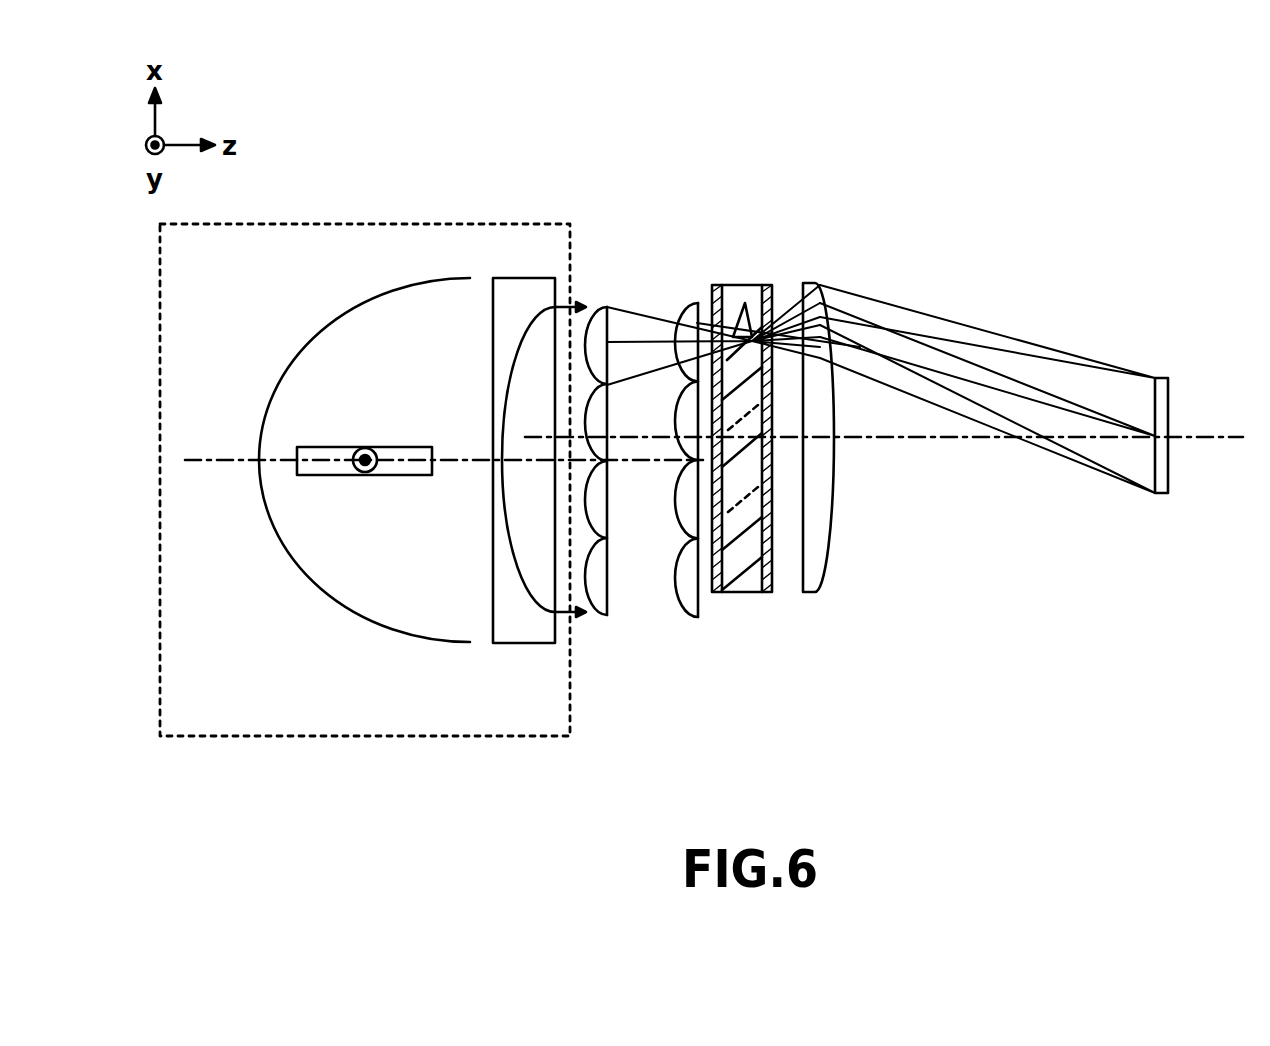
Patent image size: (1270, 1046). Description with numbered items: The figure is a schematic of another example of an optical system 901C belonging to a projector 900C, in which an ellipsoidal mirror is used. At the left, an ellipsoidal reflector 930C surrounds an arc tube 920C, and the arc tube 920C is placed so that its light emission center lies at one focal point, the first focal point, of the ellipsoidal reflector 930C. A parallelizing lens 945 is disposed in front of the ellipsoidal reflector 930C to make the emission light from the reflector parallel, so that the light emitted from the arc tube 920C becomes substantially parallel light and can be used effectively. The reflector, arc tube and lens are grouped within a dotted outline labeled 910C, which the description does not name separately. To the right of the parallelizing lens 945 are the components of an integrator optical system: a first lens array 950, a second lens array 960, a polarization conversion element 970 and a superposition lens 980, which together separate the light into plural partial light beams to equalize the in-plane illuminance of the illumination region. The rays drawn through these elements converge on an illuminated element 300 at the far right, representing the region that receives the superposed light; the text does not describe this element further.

The projector 900C is at (1250, 134).
The optical system 901C is at (868, 112).
The light source device 910C is at (420, 224).
The arc tube 920C is at (405, 476).
The ellipsoidal reflector 930C is at (303, 340).
The parallelizing lens 945 is at (518, 644).
The first lens array 950 is at (603, 284).
The second lens array 960 is at (693, 282).
The polarization conversion element 970 is at (755, 284).
The superposition lens 980 is at (812, 283).
The illuminated area (light modulation device) 300 is at (1163, 377).